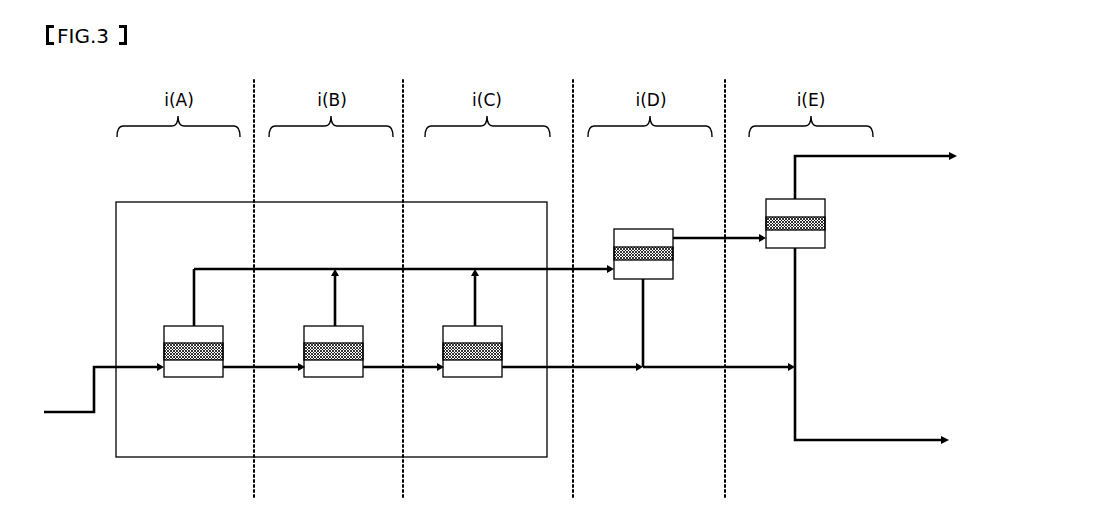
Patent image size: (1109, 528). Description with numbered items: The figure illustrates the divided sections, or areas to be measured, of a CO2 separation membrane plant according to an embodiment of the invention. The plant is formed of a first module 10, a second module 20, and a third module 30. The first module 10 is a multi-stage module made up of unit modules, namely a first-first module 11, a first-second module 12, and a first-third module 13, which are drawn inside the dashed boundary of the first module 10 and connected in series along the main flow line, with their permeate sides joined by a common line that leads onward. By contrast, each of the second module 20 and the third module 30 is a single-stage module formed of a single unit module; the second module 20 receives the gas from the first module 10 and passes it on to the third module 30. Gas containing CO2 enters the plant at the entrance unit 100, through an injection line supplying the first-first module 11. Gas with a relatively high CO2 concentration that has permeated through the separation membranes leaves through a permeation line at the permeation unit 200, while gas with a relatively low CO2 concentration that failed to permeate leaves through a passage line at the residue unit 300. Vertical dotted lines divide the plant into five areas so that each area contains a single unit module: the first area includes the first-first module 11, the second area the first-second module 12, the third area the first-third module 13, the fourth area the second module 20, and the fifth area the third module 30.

The first module 10 is at (437, 457).
The first-first module 11 is at (193, 372).
The first-second module 12 is at (333, 372).
The first-third module 13 is at (472, 372).
The second module 20 is at (619, 229).
The third module 30 is at (826, 248).
The entrance unit 100 is at (104, 406).
The permeation unit 200 is at (876, 164).
The residue unit 300 is at (872, 364).